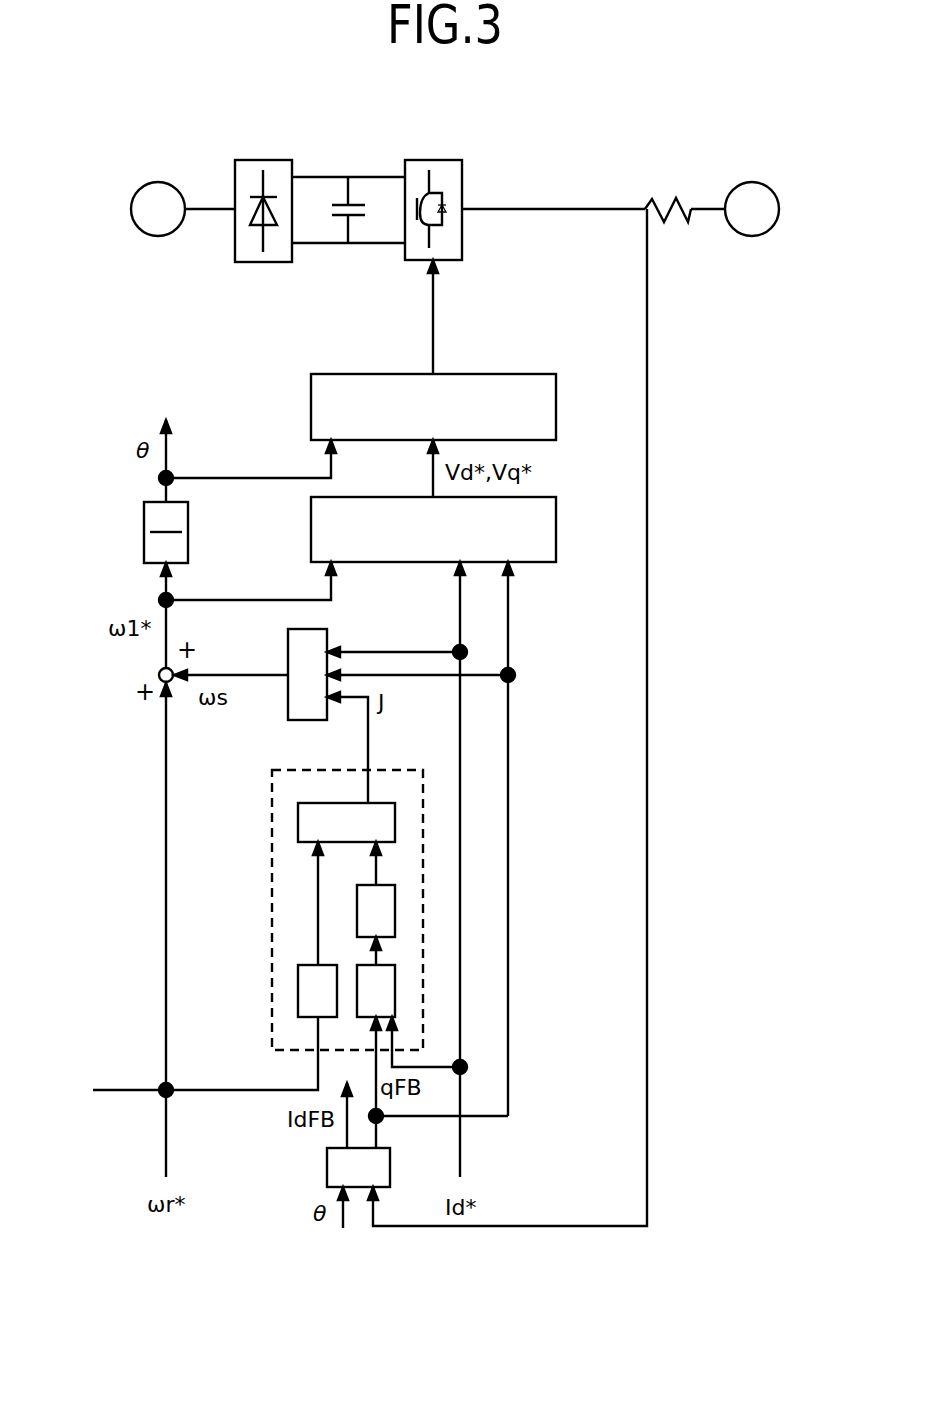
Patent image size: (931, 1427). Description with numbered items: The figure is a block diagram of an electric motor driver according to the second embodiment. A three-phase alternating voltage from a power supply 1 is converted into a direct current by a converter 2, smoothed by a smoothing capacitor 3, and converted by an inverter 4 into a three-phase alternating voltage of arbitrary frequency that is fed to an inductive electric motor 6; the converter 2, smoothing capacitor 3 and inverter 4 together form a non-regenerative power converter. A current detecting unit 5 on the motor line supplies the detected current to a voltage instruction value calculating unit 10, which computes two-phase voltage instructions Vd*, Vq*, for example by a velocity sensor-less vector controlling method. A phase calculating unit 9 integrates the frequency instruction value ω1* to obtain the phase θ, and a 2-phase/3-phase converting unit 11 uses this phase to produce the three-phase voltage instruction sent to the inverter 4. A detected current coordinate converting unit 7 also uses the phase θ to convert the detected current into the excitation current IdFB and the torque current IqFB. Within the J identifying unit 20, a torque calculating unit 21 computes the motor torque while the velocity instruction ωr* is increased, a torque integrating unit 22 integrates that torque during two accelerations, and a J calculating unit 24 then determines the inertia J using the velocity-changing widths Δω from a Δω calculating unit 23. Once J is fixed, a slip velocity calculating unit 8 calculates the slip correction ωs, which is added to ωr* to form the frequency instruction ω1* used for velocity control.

The power supply 1 is at (155, 197).
The converter 2 is at (248, 170).
The smoothing capacitor 3 is at (340, 205).
The inverter 4 is at (445, 168).
The current detecting unit 5 is at (653, 200).
The inductive electric motor 6 is at (752, 190).
The detected current coordinate converting unit 7 is at (358, 1167).
The slip velocity calculating unit 8 is at (307, 674).
The phase calculating unit 9 is at (144, 533).
The voltage instruction value calculating unit 10 is at (433, 529).
The 2-phase/3-phase converting unit 11 is at (433, 407).
The J identifying unit 20 is at (402, 770).
The torque calculating unit 21 is at (376, 991).
The torque integrating unit 22 is at (405, 908).
The Δω calculating unit 23 is at (317, 991).
The J calculating unit 24 is at (346, 822).